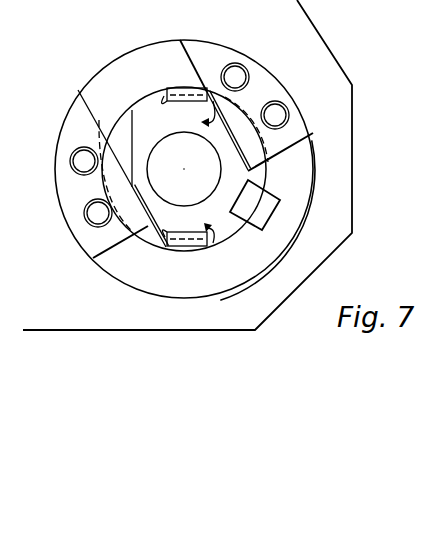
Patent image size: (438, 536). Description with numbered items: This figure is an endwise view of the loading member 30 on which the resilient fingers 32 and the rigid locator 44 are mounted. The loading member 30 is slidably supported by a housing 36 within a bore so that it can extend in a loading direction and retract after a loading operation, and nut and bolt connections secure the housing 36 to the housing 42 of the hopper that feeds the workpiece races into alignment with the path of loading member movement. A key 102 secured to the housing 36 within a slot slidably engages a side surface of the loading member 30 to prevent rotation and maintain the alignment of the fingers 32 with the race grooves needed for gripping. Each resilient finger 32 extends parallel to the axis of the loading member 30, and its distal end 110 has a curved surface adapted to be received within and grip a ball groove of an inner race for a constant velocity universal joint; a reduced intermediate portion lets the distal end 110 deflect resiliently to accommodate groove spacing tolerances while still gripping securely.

The loading member 30 is at (276, 172).
The resilient fingers 32 is at (216, 97).
The housing 36 is at (308, 152).
The hopper housing 42 is at (250, 79).
The rigid locator 44 is at (153, 156).
The key 102 is at (128, 100).
The distal end 110 is at (165, 97).